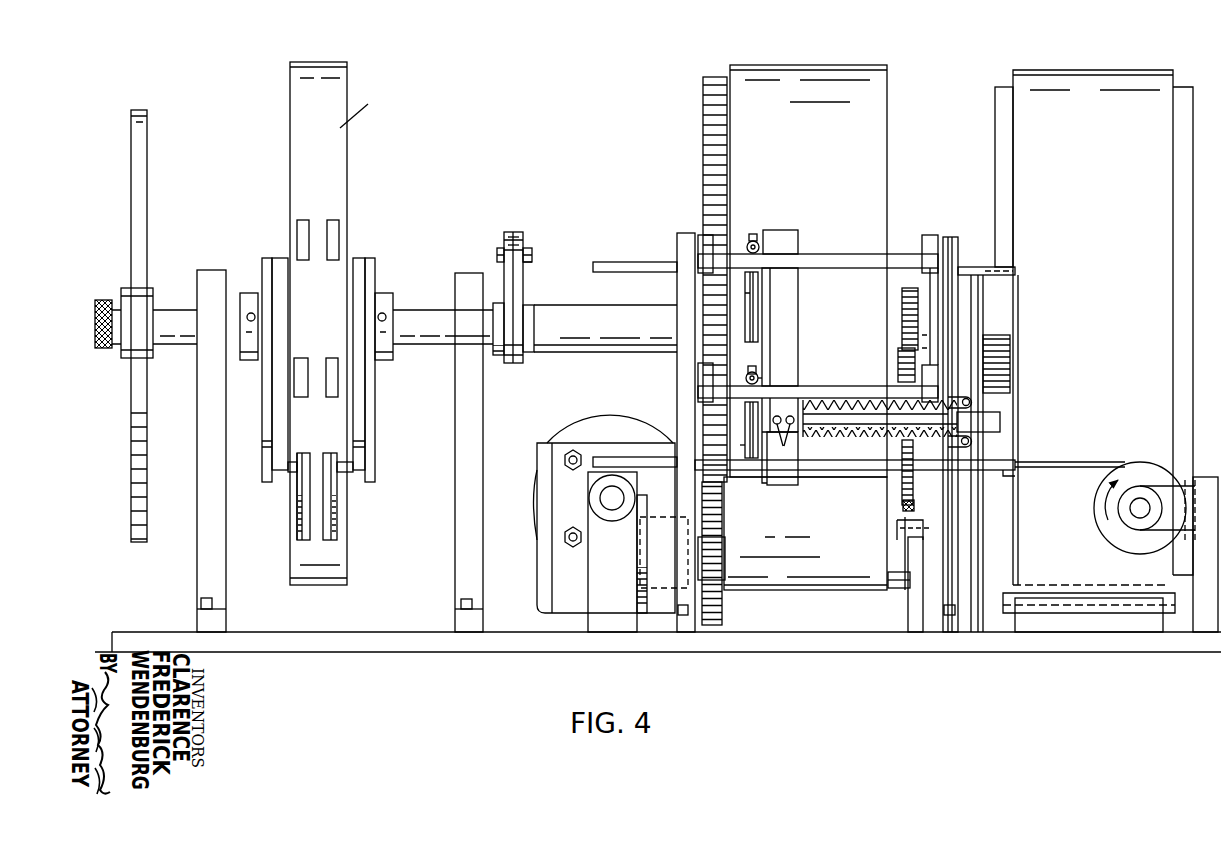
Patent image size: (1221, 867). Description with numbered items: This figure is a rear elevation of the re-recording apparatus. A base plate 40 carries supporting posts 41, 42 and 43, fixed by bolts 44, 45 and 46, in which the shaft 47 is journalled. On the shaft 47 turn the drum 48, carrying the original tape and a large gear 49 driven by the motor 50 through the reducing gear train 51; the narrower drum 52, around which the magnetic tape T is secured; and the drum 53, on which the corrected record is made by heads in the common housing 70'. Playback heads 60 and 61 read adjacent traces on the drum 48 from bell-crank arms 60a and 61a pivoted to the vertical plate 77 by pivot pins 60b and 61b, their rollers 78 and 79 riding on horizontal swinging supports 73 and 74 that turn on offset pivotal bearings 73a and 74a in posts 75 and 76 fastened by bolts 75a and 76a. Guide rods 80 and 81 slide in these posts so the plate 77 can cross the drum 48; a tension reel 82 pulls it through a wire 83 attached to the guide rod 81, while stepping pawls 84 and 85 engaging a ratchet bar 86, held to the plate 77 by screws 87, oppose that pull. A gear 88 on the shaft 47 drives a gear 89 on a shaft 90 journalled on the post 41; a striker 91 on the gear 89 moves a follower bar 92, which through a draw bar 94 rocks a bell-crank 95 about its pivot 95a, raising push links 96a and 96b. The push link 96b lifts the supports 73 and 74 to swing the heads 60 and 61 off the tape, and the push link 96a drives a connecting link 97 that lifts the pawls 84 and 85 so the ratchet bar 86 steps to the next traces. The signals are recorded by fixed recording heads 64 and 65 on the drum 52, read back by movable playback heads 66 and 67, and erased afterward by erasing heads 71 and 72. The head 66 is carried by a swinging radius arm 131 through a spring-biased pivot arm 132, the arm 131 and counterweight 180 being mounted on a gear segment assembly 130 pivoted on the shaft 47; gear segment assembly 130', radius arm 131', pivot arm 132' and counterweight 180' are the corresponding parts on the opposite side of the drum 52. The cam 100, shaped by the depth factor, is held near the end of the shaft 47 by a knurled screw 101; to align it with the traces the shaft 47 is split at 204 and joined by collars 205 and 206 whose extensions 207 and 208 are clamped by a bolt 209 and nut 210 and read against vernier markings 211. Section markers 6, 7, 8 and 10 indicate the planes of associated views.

The base plate 40 is at (413, 652).
The supporting post 41 is at (970, 267).
The supporting post 42 is at (473, 272).
The supporting post 43 is at (211, 270).
The bolt 44 is at (970, 600).
The bolt 45 is at (473, 604).
The bolt 46 is at (213, 604).
The shaft 47 is at (432, 345).
The drum 48 is at (828, 65).
The large gear 49 is at (710, 80).
The motor 50 is at (618, 424).
The reducing gear train 51 is at (715, 602).
The drum 52 is at (321, 62).
The drum 53 is at (1099, 70).
The magnetic tape T is at (361, 110).
The playback head 60 is at (757, 302).
The bell-crank arm 60a is at (755, 283).
The pivot pin 60b is at (765, 238).
The playback head 61 is at (734, 444).
The bell-crank arm 61a is at (747, 410).
The pivot pin 61b is at (759, 378).
The recording head 64 is at (300, 358).
The recording head 65 is at (331, 358).
The playback head 66 is at (297, 525).
The playback head 67 is at (338, 525).
The common housing 70' is at (986, 165).
The erasing head 71 is at (303, 220).
The erasing head 72 is at (333, 220).
The horizontal swinging support 73 is at (815, 254).
The offset pivotal bearing 73a is at (718, 240).
The horizontal swinging support 74 is at (838, 388).
The offset pivotal bearing 74a is at (735, 362).
The post 75 is at (686, 233).
The bolt 75a is at (683, 615).
The post 76 is at (950, 237).
The bolt 76a is at (950, 615).
The vertical plate 77 is at (767, 326).
The roller 78 is at (756, 238).
The roller 79 is at (757, 375).
The horizontal guide rod 80 is at (655, 262).
The horizontal guide rod 81 is at (872, 458).
The tension reel 82 is at (1150, 468).
The wire 83 is at (1045, 462).
The stepping pawl 84 is at (960, 380).
The stepping pawl 85 is at (952, 453).
The ratchet bar 86 is at (995, 418).
The screws 87 is at (780, 450).
The gear 88 is at (907, 308).
The gear 89 is at (902, 497).
The shaft 90 is at (928, 440).
The striker 91 is at (898, 375).
The follower bar 92 is at (893, 475).
The draw bar 94 is at (890, 588).
The bell-crank 95 is at (905, 553).
The pivot 95a is at (903, 522).
The push link 96a is at (903, 510).
The push link 96b is at (950, 323).
The connecting link 97 is at (985, 474).
The cam 100 is at (145, 109).
The knurled screw 101 is at (102, 300).
The gear segment assembly 130 is at (258, 364).
The bar 130' is at (387, 364).
The swinging radius arm 131 is at (250, 379).
The swinging radius arm 131' is at (390, 370).
The spring biased pivot arm 132 is at (270, 496).
The arm 132' is at (374, 479).
The counterweight 180 is at (247, 295).
The counterweight 180' is at (400, 303).
The shaft split 204 is at (500, 355).
The collar 205 is at (528, 303).
The collar 206 is at (497, 308).
The extension 207 is at (524, 252).
The extension 208 is at (505, 242).
The bolt 209 is at (532, 258).
The nut 210 is at (525, 266).
The vernier markings 211 is at (520, 234).
The section line 6- 6 is at (1220, 40).
The section line 7- 7 is at (87, 175).
The section line 8- 8 is at (231, 270).
The section line 10- 10 is at (722, 77).